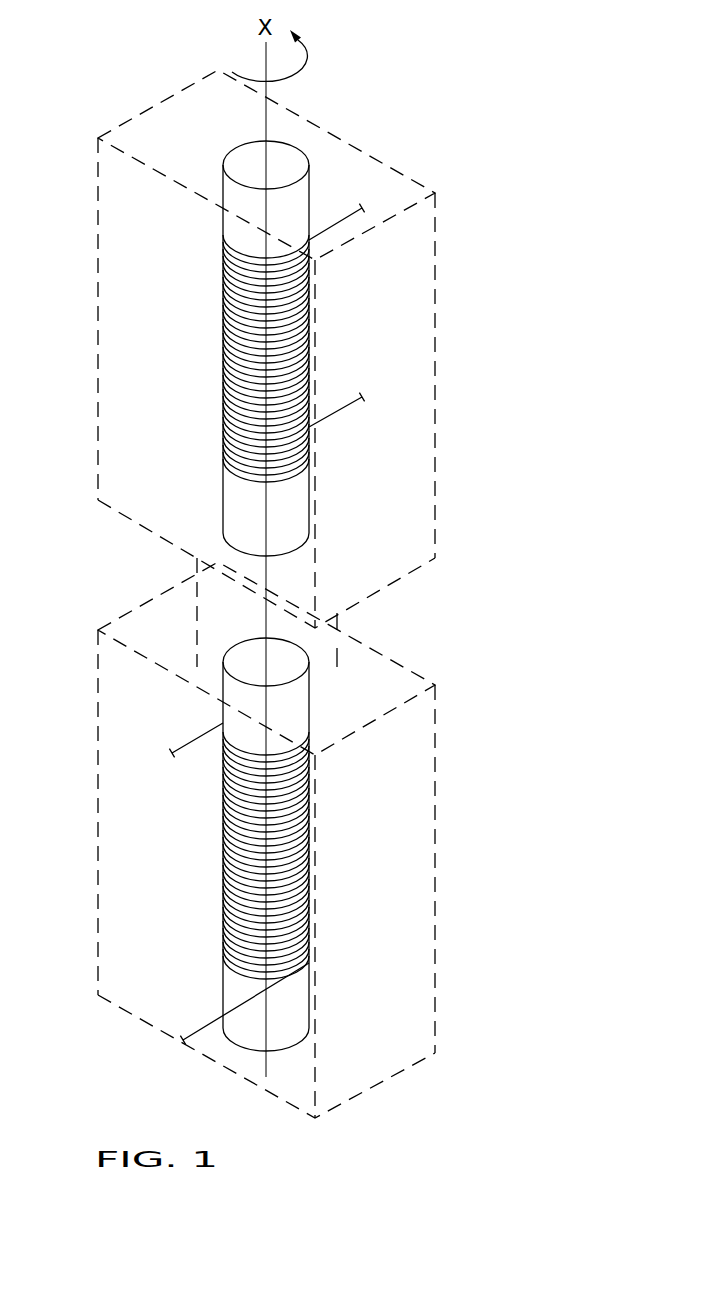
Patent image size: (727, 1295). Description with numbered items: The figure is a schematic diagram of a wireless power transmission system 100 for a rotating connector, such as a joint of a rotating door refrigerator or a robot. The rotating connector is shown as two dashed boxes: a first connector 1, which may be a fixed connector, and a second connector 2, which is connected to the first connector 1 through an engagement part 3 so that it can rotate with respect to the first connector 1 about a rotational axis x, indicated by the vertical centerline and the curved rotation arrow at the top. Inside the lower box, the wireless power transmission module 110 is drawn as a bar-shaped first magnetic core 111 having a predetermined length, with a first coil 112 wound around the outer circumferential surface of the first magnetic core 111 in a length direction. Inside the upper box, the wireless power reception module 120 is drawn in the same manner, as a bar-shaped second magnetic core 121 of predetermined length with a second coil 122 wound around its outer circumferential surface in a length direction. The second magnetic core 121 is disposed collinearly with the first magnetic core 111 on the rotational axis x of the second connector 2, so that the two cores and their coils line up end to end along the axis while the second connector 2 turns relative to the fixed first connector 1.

The wireless power transmission system 100 is at (133, 74).
The first connector 1 is at (435, 859).
The second connector 2 is at (435, 340).
The engagement part 3 is at (337, 650).
The wireless power transmission module 110 is at (208, 840).
The first magnetic core 111 is at (234, 690).
The first coil 112 is at (238, 826).
The wireless power reception module 120 is at (286, 340).
The second magnetic core 121 is at (234, 196).
The second coil 122 is at (299, 341).